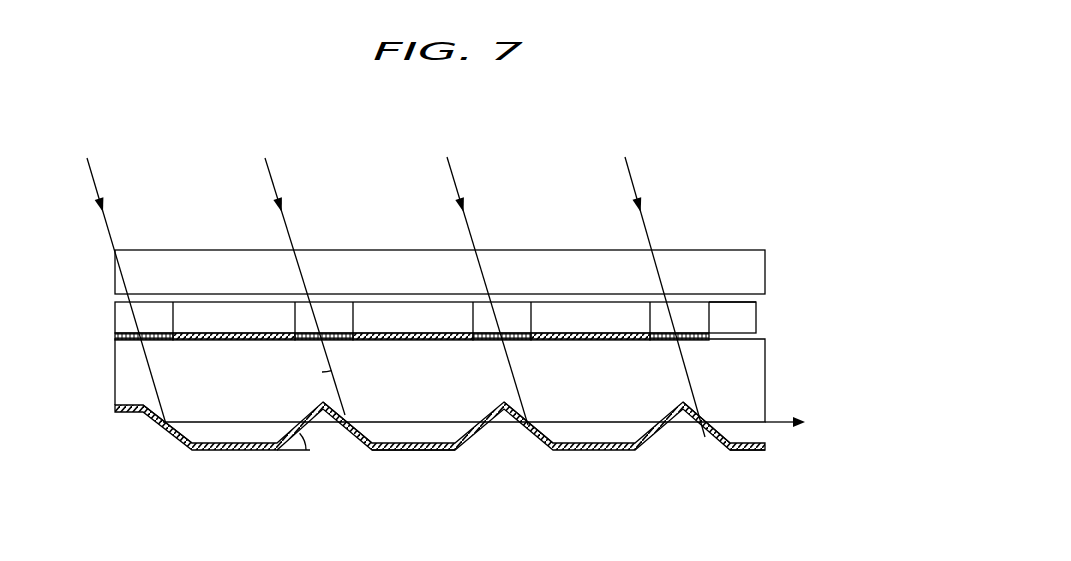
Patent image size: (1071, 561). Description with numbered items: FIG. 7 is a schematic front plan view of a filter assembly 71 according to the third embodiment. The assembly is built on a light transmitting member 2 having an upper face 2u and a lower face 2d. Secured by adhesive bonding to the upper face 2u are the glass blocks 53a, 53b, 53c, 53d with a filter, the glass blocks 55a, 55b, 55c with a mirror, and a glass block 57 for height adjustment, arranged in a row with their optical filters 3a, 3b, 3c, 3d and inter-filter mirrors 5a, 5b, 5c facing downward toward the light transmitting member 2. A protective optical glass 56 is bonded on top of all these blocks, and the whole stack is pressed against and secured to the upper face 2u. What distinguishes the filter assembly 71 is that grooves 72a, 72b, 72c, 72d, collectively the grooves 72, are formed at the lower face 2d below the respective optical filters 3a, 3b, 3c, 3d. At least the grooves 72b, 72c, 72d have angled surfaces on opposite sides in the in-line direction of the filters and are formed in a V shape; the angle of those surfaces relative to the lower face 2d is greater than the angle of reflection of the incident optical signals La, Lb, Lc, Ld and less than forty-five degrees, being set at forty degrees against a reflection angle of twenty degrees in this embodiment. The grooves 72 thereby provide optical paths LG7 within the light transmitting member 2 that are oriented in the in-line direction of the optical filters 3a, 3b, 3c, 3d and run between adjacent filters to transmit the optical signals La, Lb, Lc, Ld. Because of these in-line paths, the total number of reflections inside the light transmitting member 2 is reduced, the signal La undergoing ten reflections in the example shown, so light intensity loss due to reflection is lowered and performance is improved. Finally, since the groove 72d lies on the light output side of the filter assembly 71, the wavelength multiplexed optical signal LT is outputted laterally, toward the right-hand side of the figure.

The filter assembly 71 is at (422, 155).
The protective optical glass 56 is at (766, 252).
The glass block for height adjustment 57 is at (730, 301).
The upper face 2u is at (757, 330).
The light transmitting member 2 is at (766, 363).
The lower face 2d is at (747, 451).
The wavelength multiplexed optical signal LT is at (780, 414).
The grooves 72 is at (572, 450).
The groove 72a is at (172, 436).
The groove 72b is at (347, 438).
The groove 72c is at (530, 437).
The groove 72d is at (707, 437).
The optical paths LG7 is at (392, 451).
The optical filter 3a is at (125, 341).
The optical filter 3b is at (322, 341).
The optical filter 3c is at (487, 341).
The optical filter 3d is at (662, 341).
The inter-filter mirror 5a is at (232, 341).
The inter-filter mirror 5b is at (415, 341).
The inter-filter mirror 5c is at (600, 341).
The glass block with a filter 53a is at (155, 300).
The glass block with a filter 53b is at (337, 300).
The glass block with a filter 53c is at (513, 300).
The glass block with a filter 53d is at (693, 300).
The glass block with a mirror 55a is at (225, 300).
The glass block with a mirror 55b is at (413, 300).
The glass block with a mirror 55c is at (588, 300).
The incident optical signal La is at (93, 177).
The incident optical signal Lb is at (273, 177).
The incident optical signal Lc is at (455, 177).
The incident optical signal Ld is at (632, 177).